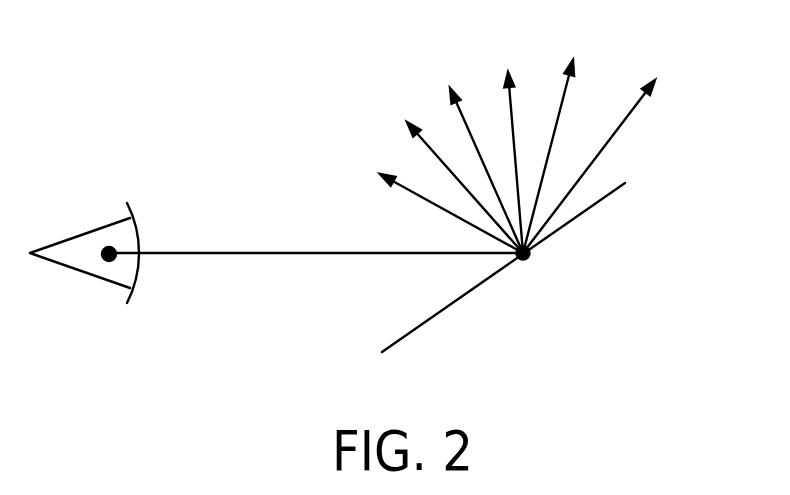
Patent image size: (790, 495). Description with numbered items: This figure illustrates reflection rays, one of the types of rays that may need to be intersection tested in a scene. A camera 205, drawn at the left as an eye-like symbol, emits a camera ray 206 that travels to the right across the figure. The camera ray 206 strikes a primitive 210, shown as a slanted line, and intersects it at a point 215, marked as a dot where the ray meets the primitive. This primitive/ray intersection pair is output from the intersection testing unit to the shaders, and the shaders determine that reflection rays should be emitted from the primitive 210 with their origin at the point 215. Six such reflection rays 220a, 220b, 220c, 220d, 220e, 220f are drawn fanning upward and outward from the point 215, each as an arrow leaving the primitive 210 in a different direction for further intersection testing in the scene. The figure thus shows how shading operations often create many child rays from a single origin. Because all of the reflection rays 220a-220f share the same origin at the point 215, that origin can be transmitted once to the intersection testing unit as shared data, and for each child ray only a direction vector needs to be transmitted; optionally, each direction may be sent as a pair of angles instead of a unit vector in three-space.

The camera 205 is at (75, 235).
The camera ray 206 is at (185, 250).
The primitive 210 is at (472, 288).
The point 215 is at (528, 259).
The reflection ray 220a is at (400, 187).
The reflection ray 220b is at (430, 152).
The reflection ray 220c is at (460, 125).
The reflection ray 220d is at (513, 110).
The reflection ray 220e is at (570, 92).
The reflection ray 220f is at (628, 115).